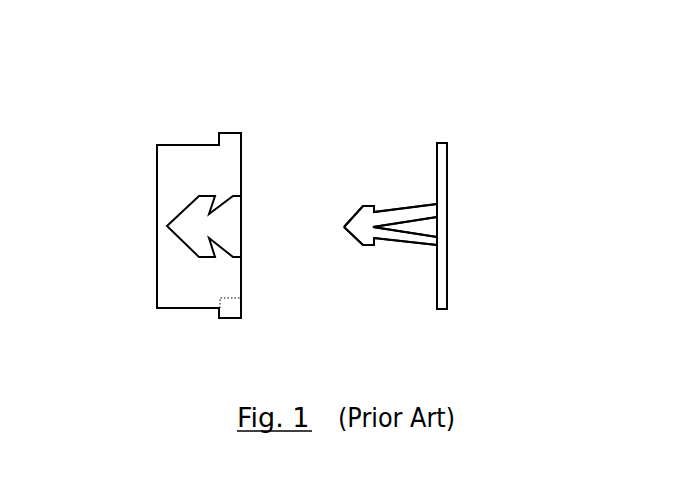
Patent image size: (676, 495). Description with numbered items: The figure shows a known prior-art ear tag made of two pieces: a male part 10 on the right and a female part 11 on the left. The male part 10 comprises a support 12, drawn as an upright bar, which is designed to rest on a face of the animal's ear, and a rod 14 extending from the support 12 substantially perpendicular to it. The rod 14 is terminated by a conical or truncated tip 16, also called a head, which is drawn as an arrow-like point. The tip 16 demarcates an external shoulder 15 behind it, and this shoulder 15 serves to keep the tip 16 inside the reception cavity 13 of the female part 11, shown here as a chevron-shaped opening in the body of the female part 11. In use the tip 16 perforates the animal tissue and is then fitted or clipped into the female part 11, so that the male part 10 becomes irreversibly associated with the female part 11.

The male part 10 is at (423, 202).
The female part 11 is at (167, 135).
The support 12 is at (441, 288).
The reception cavity 13 is at (231, 224).
The rod 14 is at (407, 210).
The external shoulder 15 is at (370, 246).
The tip 16 is at (365, 241).